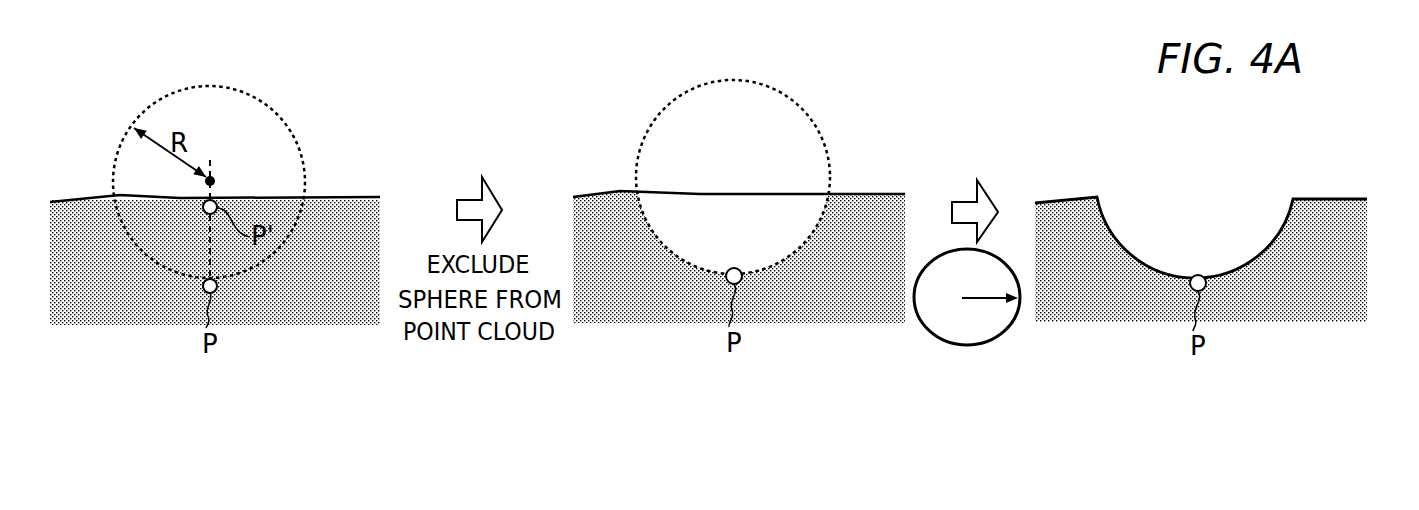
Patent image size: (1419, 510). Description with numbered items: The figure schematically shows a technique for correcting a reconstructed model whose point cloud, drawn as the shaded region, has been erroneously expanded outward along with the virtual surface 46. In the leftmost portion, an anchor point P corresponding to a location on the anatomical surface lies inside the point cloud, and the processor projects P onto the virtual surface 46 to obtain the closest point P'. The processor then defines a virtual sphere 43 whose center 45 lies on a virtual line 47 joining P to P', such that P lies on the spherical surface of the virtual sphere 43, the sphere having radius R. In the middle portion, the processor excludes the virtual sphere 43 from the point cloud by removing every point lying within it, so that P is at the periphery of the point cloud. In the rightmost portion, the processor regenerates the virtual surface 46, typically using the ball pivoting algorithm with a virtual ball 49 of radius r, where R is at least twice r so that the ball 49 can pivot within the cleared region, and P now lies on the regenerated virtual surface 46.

The virtual sphere 43 is at (307, 150).
The center 45 is at (215, 182).
The virtual surface 46 is at (122, 196).
The virtual line 47 is at (208, 253).
The virtual ball 49 is at (1002, 327).